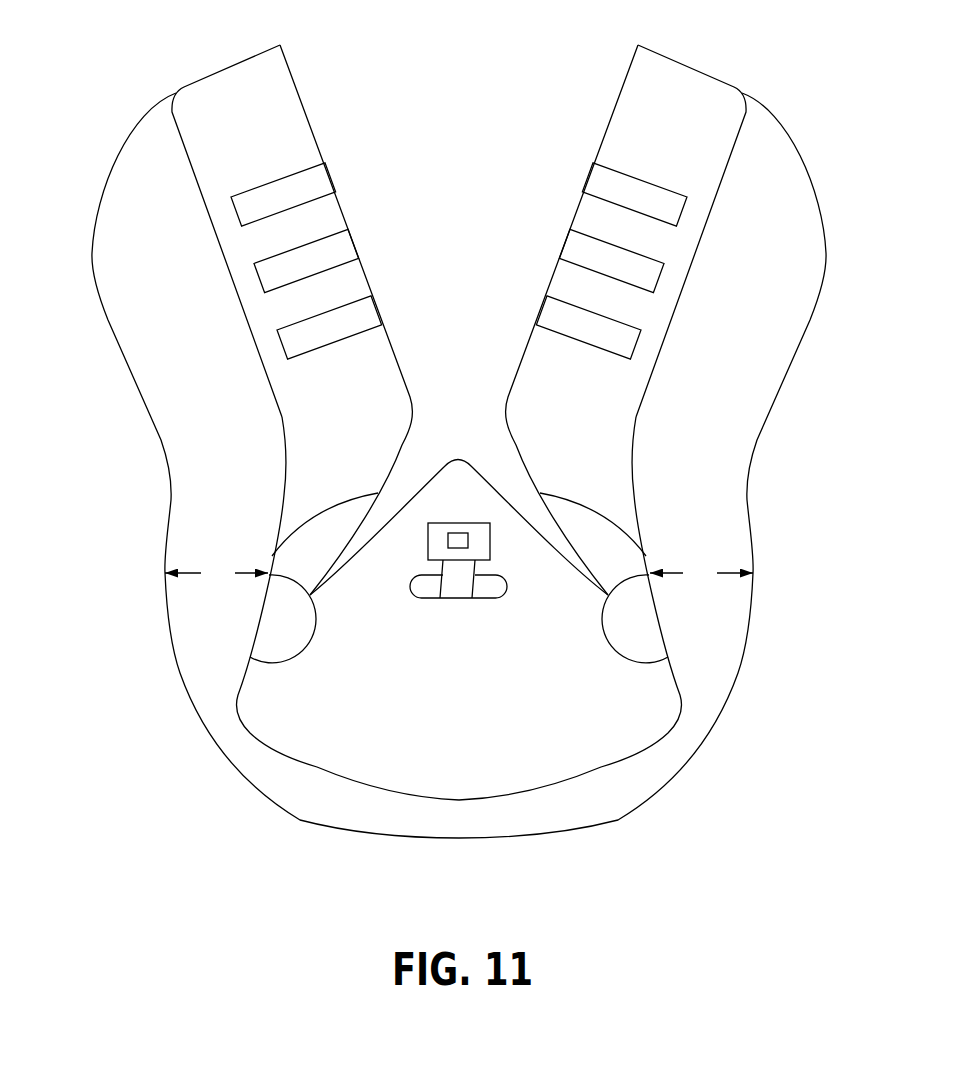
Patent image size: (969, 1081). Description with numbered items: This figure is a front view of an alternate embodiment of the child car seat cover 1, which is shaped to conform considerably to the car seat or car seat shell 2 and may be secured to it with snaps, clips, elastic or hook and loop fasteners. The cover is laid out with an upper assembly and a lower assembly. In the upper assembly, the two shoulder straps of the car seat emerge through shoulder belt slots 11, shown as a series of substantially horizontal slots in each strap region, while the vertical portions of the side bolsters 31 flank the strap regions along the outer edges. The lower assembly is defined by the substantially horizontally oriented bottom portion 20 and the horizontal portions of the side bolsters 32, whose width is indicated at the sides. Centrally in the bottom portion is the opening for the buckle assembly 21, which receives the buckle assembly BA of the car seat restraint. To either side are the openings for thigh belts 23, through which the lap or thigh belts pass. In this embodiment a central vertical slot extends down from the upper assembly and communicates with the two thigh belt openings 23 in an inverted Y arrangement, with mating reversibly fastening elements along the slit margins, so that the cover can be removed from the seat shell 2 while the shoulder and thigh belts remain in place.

The child car seat cover 1 is at (227, 100).
The car seat shell 2 is at (85, 245).
The shoulder belt slots 11 is at (295, 210).
The bottom portion 20 is at (444, 697).
The opening for the buckle assembly 21 is at (483, 600).
The openings for thigh belts 23 is at (275, 615).
The vertical portions of the side bolsters 31 is at (167, 243).
The horizontal portions of the side bolsters 32 is at (459, 574).
The buckle assembly BA is at (473, 520).